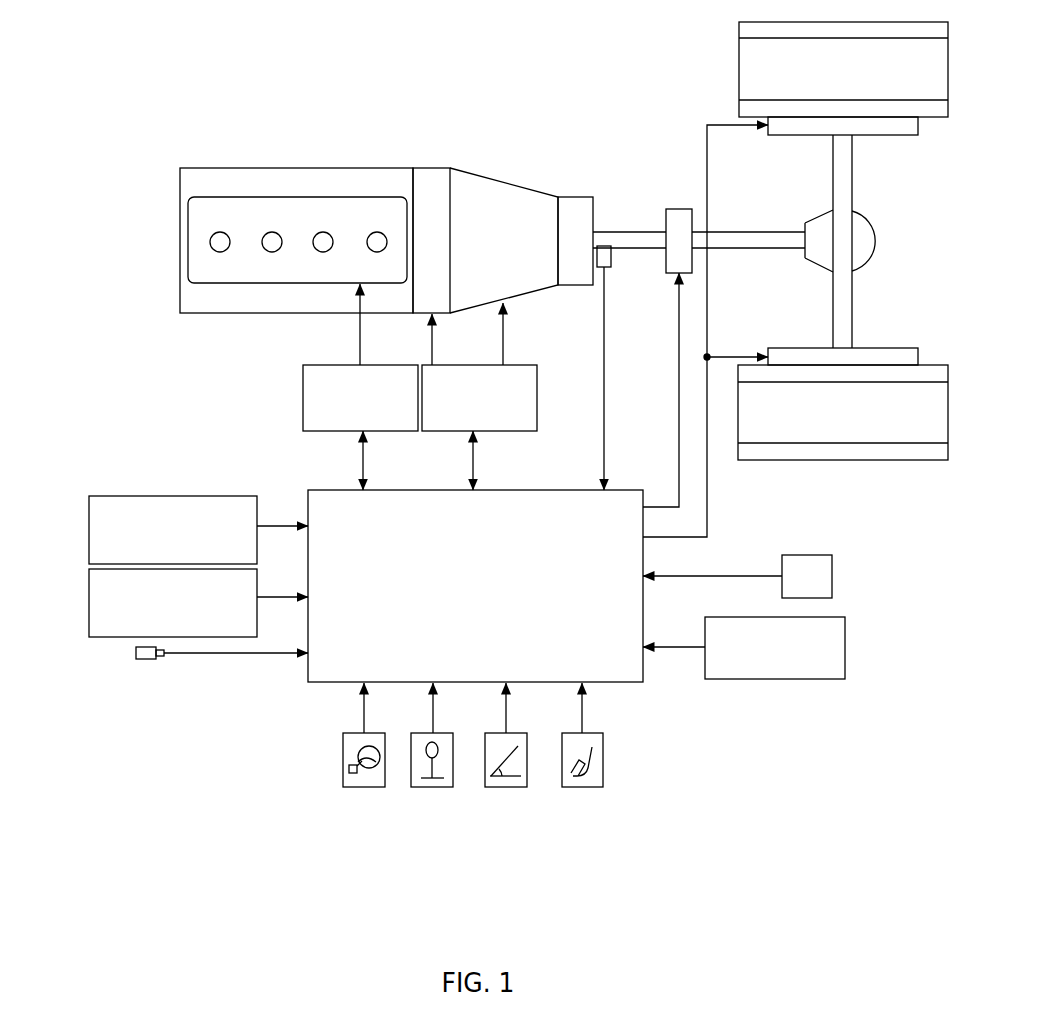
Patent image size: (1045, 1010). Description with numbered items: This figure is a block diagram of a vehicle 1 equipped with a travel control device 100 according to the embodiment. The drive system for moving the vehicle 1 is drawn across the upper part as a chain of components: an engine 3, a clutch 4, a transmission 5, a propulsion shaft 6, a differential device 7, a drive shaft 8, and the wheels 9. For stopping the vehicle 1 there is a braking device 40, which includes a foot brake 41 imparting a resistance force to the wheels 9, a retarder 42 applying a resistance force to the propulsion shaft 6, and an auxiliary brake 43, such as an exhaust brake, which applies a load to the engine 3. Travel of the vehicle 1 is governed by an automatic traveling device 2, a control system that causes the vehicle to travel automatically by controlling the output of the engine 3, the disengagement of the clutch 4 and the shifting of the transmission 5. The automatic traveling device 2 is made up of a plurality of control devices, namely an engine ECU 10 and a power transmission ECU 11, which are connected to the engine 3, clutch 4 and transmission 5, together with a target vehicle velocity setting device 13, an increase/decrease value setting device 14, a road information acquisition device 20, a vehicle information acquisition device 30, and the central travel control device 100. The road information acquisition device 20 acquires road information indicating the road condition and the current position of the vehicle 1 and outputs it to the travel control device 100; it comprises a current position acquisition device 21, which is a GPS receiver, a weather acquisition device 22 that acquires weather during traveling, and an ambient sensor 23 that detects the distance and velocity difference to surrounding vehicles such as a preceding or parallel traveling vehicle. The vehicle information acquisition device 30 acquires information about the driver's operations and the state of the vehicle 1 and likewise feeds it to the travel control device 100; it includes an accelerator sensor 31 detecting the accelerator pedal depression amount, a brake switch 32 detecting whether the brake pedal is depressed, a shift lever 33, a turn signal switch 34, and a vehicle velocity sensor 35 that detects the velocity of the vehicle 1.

The vehicle 1 is at (176, 143).
The automatic traveling device 2 is at (618, 692).
The engine 3 is at (302, 168).
The clutch 4 is at (433, 168).
The transmission 5 is at (510, 184).
The propulsion shaft 6 is at (742, 232).
The differential device 7 is at (868, 241).
The drive shaft 8 is at (852, 165).
The wheels 9 is at (936, 363).
The engine ECU 10 is at (303, 400).
The power transmission ECU 11 is at (537, 400).
The target vehicle velocity setting device 13 is at (832, 575).
The increase/decrease value setting device 14 is at (845, 645).
The road information acquisition device 20 is at (97, 485).
The current position acquisition device 21 is at (89, 527).
The weather acquisition device 22 is at (89, 598).
The ambient sensor 23 is at (136, 653).
The vehicle information acquisition device 30 is at (330, 762).
The accelerator sensor 31 is at (505, 789).
The brake switch 32 is at (580, 789).
The shift lever 33 is at (431, 789).
The turn signal switch 34 is at (363, 789).
The vehicle velocity sensor 35 is at (612, 262).
The braking device 40 is at (680, 137).
The foot brake 41 is at (792, 137).
The retarder 42 is at (678, 209).
The auxiliary brake 43 is at (194, 318).
The travel control device 100 is at (570, 490).